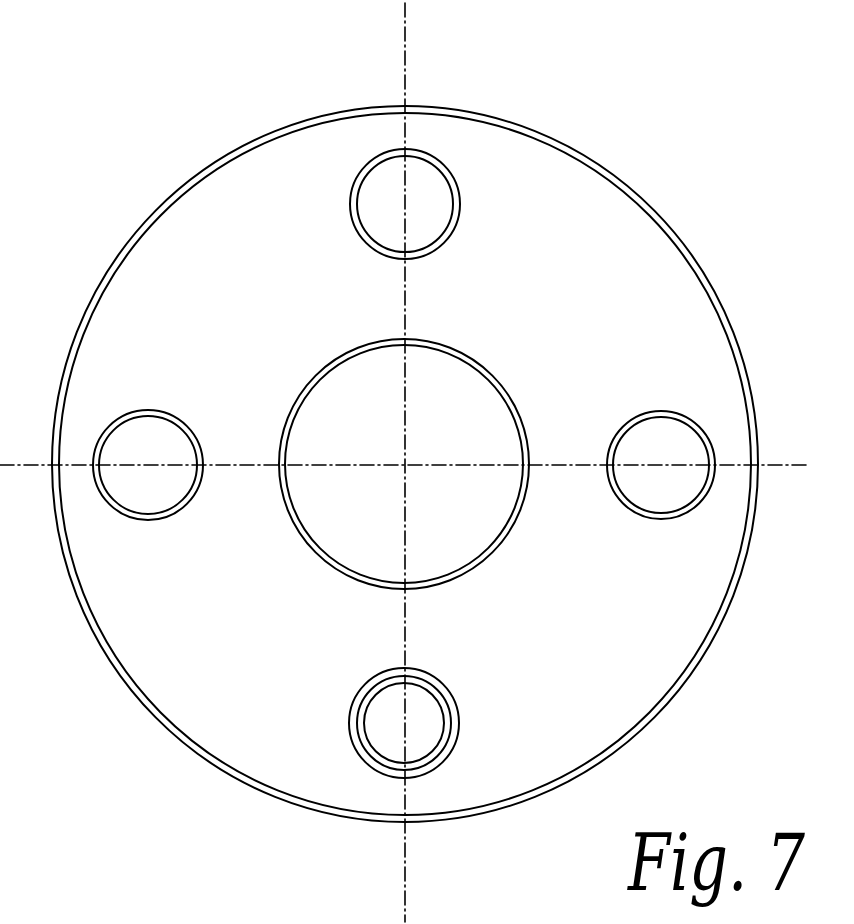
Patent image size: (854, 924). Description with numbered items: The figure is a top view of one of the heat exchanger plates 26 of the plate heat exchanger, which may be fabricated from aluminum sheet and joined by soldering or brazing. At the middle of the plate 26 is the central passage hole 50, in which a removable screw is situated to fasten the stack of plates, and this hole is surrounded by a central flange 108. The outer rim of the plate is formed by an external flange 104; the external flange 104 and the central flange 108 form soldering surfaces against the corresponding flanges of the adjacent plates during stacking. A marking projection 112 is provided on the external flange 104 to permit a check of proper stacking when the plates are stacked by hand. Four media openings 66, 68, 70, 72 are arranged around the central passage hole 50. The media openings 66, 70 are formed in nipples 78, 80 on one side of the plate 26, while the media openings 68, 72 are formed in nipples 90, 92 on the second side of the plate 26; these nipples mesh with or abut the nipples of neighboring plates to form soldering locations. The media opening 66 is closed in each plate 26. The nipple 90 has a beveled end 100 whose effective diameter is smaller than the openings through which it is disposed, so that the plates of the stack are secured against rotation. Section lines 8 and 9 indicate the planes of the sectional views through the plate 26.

The heat exchanger plate 26 is at (608, 131).
The external flange 104 is at (680, 240).
The central flange 108 is at (493, 375).
The marking projection 112 is at (406, 340).
The central passage hole 50 is at (455, 423).
The media opening 72 is at (428, 197).
The nipple 92 is at (453, 198).
The nipple 78 is at (157, 410).
The media opening 66 is at (167, 448).
The nipple 80 is at (675, 408).
The media opening 70 is at (692, 457).
The beveled end 100 is at (407, 680).
The nipple 90 is at (448, 694).
The media opening 68 is at (428, 733).
The section line 8- 8 is at (25, 466).
The section line 9- 9 is at (405, 17).